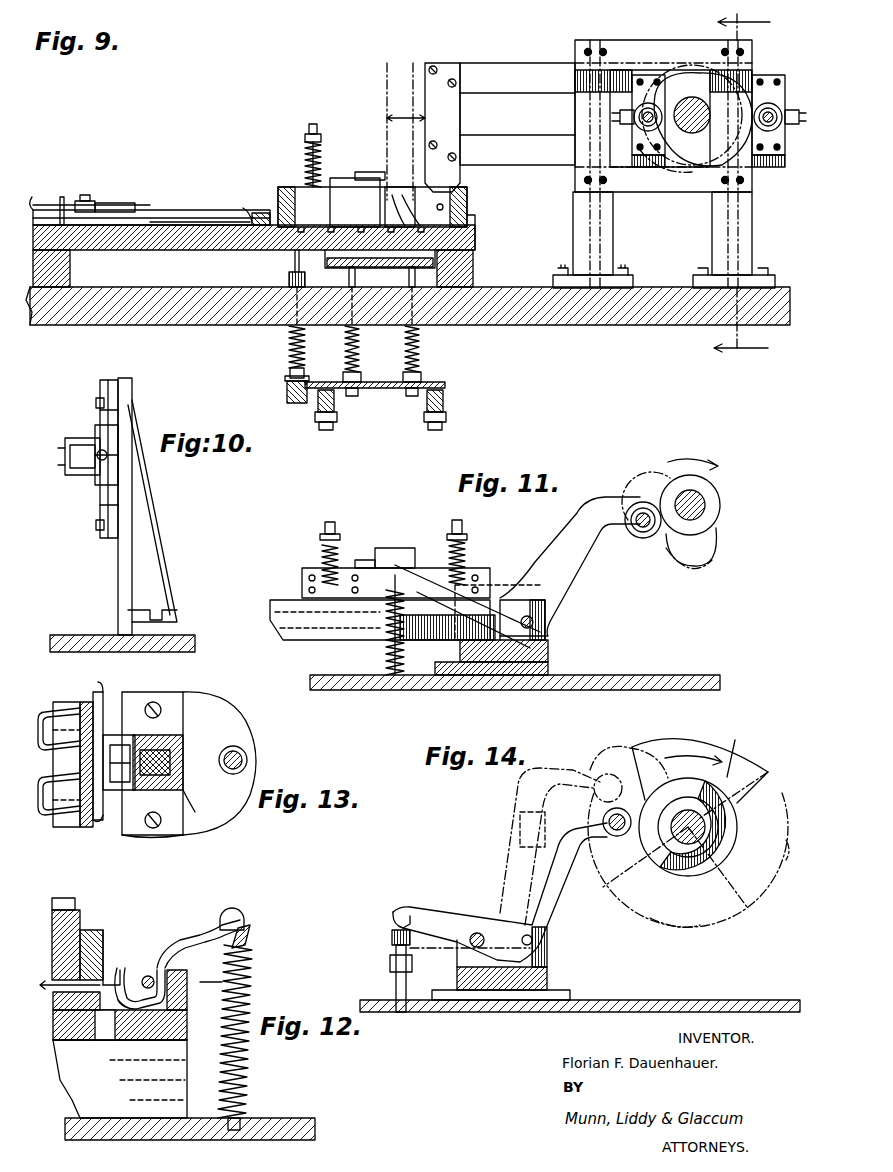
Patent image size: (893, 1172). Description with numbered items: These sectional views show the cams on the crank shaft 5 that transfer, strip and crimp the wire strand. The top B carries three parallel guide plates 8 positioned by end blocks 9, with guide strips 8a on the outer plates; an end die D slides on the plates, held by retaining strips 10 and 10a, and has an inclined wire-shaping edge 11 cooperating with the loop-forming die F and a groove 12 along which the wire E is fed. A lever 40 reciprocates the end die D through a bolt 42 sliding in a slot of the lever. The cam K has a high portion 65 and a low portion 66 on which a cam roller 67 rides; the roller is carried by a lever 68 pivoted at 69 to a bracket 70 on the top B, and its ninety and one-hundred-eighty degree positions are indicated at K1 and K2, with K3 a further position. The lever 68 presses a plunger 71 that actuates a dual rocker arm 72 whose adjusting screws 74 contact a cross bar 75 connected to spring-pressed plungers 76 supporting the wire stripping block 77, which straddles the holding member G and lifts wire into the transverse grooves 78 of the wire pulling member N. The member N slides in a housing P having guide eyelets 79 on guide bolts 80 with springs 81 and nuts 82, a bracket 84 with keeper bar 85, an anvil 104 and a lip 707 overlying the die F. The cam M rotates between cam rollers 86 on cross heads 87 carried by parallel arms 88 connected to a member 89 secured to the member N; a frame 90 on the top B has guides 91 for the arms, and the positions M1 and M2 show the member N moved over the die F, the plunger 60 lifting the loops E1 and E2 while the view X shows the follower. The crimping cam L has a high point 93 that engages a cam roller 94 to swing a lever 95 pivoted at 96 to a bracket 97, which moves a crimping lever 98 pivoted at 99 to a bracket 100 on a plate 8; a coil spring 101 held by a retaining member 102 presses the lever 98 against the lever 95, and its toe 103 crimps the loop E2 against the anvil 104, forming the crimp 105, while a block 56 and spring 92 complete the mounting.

In FIG. 9, the crank shaft 5 is at (690, 133).
In FIG. 11, the crank shaft 5 is at (705, 498).
In FIG. 14, the crank shaft 5 is at (700, 820).
In FIG. 9, the guide plates 8 is at (186, 250).
In FIG. 13, the guide plates 8 is at (165, 700).
In FIG. 12, the guide plates 8 is at (187, 1030).
In FIG. 9, the guide strips 8a is at (33, 197).
In FIG. 9, the end blocks 9 is at (480, 268).
In FIG. 12, the end blocks 9 is at (187, 1092).
In FIG. 9, the retaining strip 10 is at (91, 195).
In FIG. 13, the retaining strip 10a is at (158, 840).
In FIG. 9, the inclined wire-shaping edge 11 is at (215, 218).
In FIG. 9, the wire-receiving groove 12 is at (62, 197).
In FIG. 9, the lever 40 is at (118, 203).
In FIG. 9, the bolt 42 is at (88, 195).
In FIG. 9, the block 56 is at (285, 390).
In FIG. 9, the plunger 60 is at (289, 348).
In FIG. 14, the high portion of cam K 65 is at (672, 735).
In FIG. 14, the low portion of cam K 66 is at (705, 872).
In FIG. 9, the cam roller 67 is at (289, 279).
In FIG. 14, the cam roller 67 is at (600, 778).
In FIG. 14, the lever 68 is at (515, 808).
In FIG. 14, the pivot 69 is at (477, 933).
In FIG. 14, the bracket 70 is at (547, 970).
In FIG. 14, the plunger 71 is at (390, 968).
In FIG. 9, the dual rocker arm 72 is at (318, 400).
In FIG. 9, the adjusting screws 74 is at (326, 430).
In FIG. 9, the cross bar 75 is at (390, 388).
In FIG. 9, the spring-pressed plungers 76 is at (349, 278).
In FIG. 9, the wire stripping block 77 is at (396, 268).
In FIG. 9, the transverse grooves 78 is at (396, 195).
In FIG. 11, the guide eyelets 79 is at (320, 582).
In FIG. 9, the guide bolts 80 is at (317, 127).
In FIG. 11, the guide bolts 80 is at (460, 526).
In FIG. 9, the springs 81 is at (322, 160).
In FIG. 11, the springs 81 is at (465, 560).
In FIG. 9, the nuts 82 is at (305, 140).
In FIG. 11, the nuts 82 is at (467, 537).
In FIG. 9, the bracket 84 is at (383, 172).
In FIG. 11, the bracket 84 is at (410, 562).
In FIG. 9, the keeper bar 85 is at (362, 172).
In FIG. 12, the keeper bar 85 is at (60, 898).
In FIG. 9, the cam rollers 86 is at (634, 105).
In FIG. 10, the cam rollers 86 is at (75, 438).
In FIG. 9, the cross heads 87 is at (636, 75).
In FIG. 10, the cross heads 87 is at (96, 478).
In FIG. 9, the parallel arms 88 is at (512, 93).
In FIG. 10, the parallel arms 88 is at (120, 460).
In FIG. 9, the member 89 is at (395, 112).
In FIG. 9, the frame 90 is at (712, 246).
In FIG. 10, the frame 90 is at (150, 555).
In FIG. 10, the guides 91 is at (112, 385).
In FIG. 9, the spring 92 is at (405, 348).
In FIG. 11, the high point of cam L 93 is at (645, 480).
In FIG. 11, the cam roller 94 is at (643, 538).
In FIG. 11, the lever 95 is at (570, 560).
In FIG. 12, the lever 95 is at (244, 912).
In FIG. 11, the pivot 96 is at (533, 622).
In FIG. 11, the bracket 97 is at (548, 650).
In FIG. 11, the crimping lever 98 is at (372, 566).
In FIG. 13, the crimping lever 98 is at (198, 803).
In FIG. 12, the crimping lever 98 is at (150, 976).
In FIG. 13, the pivot 99 is at (190, 702).
In FIG. 12, the pivot 99 is at (128, 1005).
In FIG. 13, the bracket 100 is at (183, 740).
In FIG. 12, the bracket 100 is at (166, 975).
In FIG. 11, the coil spring 101 is at (386, 648).
In FIG. 13, the coil spring 101 is at (242, 766).
In FIG. 12, the coil spring 101 is at (252, 1008).
In FIG. 13, the retaining member 102 is at (247, 760).
In FIG. 12, the retaining member 102 is at (210, 982).
In FIG. 13, the toe portion 103 is at (90, 818).
In FIG. 12, the toe portion 103 is at (90, 1042).
In FIG. 13, the anvil 104 is at (103, 705).
In FIG. 12, the anvil 104 is at (122, 968).
In FIG. 12, the crimp 105 is at (70, 1003).
In FIG. 9, the block 707 is at (256, 213).
In FIG. 9, the top B is at (214, 287).
In FIG. 10, the top B is at (90, 635).
In FIG. 11, the top B is at (640, 675).
In FIG. 12, the top B is at (305, 1118).
In FIG. 14, the top B is at (640, 1000).
In FIG. 9, the end die D is at (158, 218).
In FIG. 12, the wire E is at (65, 969).
In FIG. 13, the wire loop E1 is at (38, 712).
In FIG. 13, the wire loop E2 is at (103, 756).
In FIG. 9, the loop-forming die F is at (241, 205).
In FIG. 9, the wire holding member G is at (476, 242).
In FIG. 14, the cam K is at (712, 735).
In FIG. 14, the ninety degree position of cam K K1 is at (797, 858).
In FIG. 14, the one hundred eighty degree position of cam K K2 is at (690, 925).
In FIG. 14, the cam portion K3 is at (625, 770).
In FIG. 11, the crimping cam L is at (707, 546).
In FIG. 9, the cam M is at (752, 70).
In FIG. 9, the position of cam M M1 is at (660, 175).
In FIG. 9, the position of cam M M2 is at (648, 68).
In FIG. 9, the wire pulling member N is at (340, 178).
In FIG. 12, the wire pulling member N is at (84, 930).
In FIG. 9, the housing P is at (470, 198).
In FIG. 11, the housing P is at (490, 584).
In FIG. 13, the housing P is at (68, 827).
In FIG. 12, the housing P is at (104, 930).
In FIG. 9, the section line X is at (733, 186).